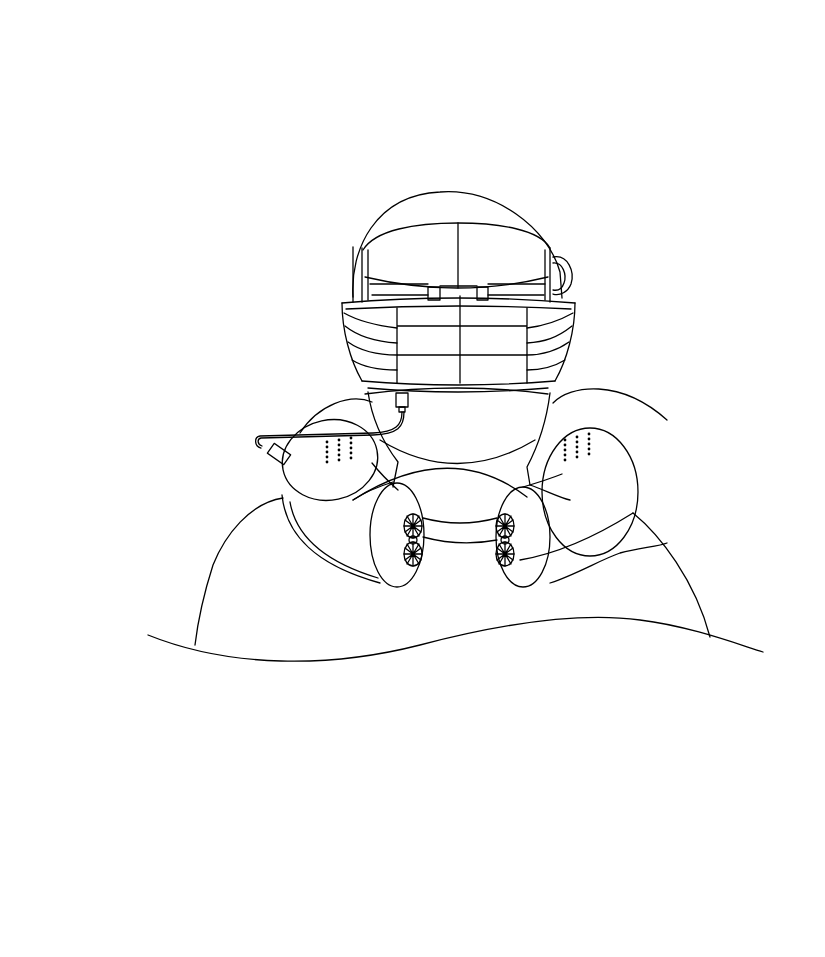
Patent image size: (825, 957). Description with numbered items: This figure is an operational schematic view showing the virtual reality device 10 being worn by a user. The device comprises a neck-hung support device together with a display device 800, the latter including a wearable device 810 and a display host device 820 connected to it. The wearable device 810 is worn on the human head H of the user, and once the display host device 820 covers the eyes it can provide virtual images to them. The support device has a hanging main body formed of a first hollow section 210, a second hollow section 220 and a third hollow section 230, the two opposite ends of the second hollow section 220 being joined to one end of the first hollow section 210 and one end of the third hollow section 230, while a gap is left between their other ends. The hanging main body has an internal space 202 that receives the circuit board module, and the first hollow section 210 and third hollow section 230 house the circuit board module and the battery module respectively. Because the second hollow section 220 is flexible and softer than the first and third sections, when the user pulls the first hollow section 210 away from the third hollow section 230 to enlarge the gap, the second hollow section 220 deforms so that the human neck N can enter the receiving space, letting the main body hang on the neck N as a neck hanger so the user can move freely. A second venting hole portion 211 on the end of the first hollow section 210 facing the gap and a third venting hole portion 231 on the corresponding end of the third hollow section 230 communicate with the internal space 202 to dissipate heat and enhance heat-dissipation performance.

The virtual reality device 10 is at (727, 138).
The human head H is at (487, 216).
The human neck N is at (283, 496).
The display device 800 is at (268, 262).
The wearable device 810 is at (377, 260).
The display host device 820 is at (343, 322).
The internal space 202 is at (738, 397).
The first hollow section 210 is at (667, 543).
The second hollow section 220 is at (667, 420).
The third hollow section 230 is at (617, 483).
The second venting hole portion 211 is at (421, 562).
The third venting hole portion 231 is at (497, 562).